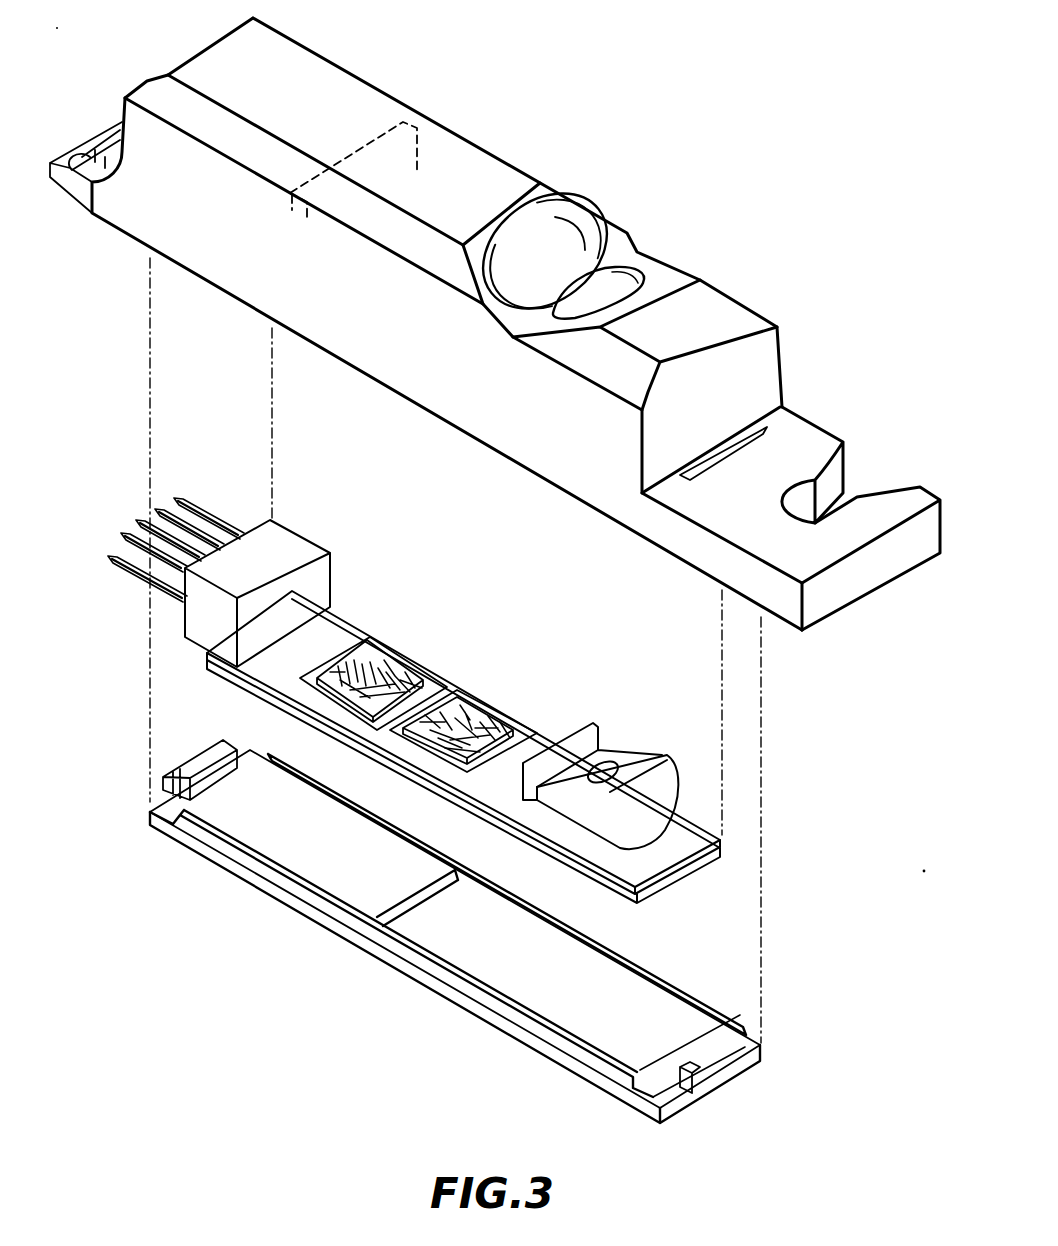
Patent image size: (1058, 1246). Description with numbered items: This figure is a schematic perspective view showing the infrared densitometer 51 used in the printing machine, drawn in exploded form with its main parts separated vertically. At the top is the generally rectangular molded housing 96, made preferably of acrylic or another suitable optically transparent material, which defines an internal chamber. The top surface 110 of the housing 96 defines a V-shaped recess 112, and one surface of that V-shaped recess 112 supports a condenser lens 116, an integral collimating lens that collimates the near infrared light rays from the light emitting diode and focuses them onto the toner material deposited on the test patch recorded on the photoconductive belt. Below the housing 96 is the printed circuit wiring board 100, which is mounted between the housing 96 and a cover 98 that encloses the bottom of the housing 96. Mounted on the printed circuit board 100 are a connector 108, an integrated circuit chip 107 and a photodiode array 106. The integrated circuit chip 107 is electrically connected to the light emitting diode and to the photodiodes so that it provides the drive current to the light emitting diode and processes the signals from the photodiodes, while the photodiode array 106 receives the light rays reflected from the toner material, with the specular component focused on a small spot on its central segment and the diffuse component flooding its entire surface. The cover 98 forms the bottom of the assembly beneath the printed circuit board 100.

The infrared densitometer 51 is at (682, 113).
The molded housing 96 is at (380, 90).
The cover 98 is at (687, 992).
The printed circuit wiring board 100 is at (695, 838).
The photodiode array 106 is at (470, 717).
The integrated circuit chip 107 is at (385, 667).
The connector 108 is at (300, 550).
The top surface 110 is at (495, 182).
The V-shaped recess 112 is at (660, 232).
The condenser lens 116 is at (617, 287).